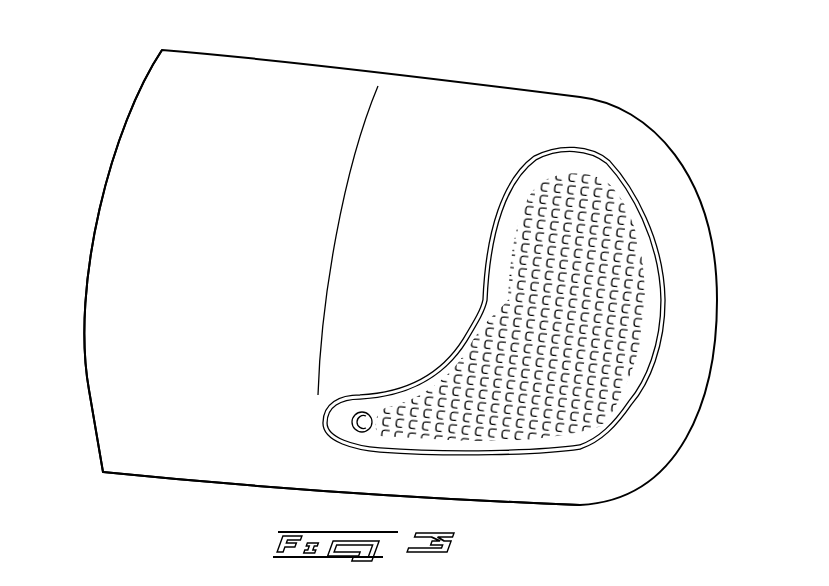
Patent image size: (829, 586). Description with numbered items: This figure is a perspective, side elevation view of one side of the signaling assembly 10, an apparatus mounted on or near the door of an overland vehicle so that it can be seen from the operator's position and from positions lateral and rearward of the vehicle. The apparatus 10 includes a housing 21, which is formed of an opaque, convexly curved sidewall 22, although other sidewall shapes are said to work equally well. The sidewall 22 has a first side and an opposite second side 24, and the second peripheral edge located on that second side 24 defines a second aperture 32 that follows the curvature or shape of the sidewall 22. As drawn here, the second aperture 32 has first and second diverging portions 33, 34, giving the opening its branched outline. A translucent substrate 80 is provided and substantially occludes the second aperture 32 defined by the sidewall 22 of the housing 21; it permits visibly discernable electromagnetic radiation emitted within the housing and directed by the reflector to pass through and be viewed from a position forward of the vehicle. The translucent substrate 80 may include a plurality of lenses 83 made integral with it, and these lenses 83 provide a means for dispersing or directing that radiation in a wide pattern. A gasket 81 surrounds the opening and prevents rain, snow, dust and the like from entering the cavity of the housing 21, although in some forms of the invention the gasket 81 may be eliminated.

The signaling assembly 10 is at (655, 98).
The housing 21 is at (141, 226).
The convexly curved sidewall 22 is at (433, 97).
The second side 24 is at (165, 445).
The second aperture 32 is at (503, 227).
The first diverging portion 33 is at (448, 420).
The second diverging portion 34 is at (552, 178).
The translucent substrate 80 is at (570, 232).
The gasket 81 is at (505, 180).
The lenses 83 is at (537, 400).